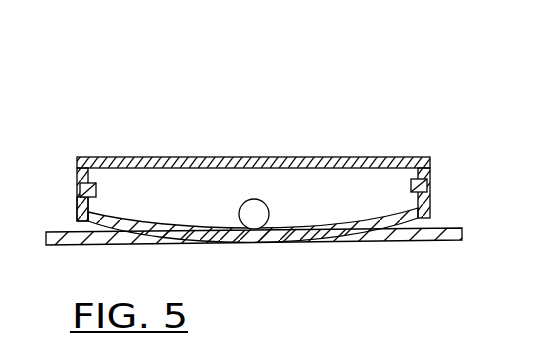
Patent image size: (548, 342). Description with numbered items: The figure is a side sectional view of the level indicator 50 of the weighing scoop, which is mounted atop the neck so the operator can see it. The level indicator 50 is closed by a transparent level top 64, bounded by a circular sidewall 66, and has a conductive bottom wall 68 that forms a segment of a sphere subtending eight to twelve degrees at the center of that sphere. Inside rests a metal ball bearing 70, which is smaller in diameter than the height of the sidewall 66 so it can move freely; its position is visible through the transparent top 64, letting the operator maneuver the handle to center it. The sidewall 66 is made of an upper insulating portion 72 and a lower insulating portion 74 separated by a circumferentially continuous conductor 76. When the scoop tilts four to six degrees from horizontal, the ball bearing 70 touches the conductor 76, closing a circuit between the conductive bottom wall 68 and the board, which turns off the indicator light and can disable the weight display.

The level indicator 50 is at (232, 87).
The transparent level top 64 is at (372, 157).
The circular sidewall 66 is at (432, 168).
The conductive bottom wall 68 is at (403, 220).
The metal ball bearing 70 is at (254, 214).
The upper insulating portion 72 is at (77, 176).
The lower insulating portion 74 is at (78, 200).
The conductor 76 is at (79, 183).